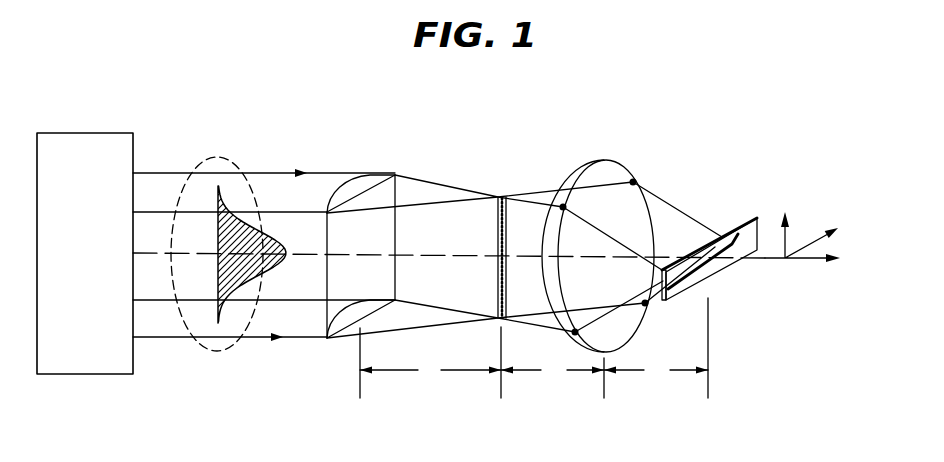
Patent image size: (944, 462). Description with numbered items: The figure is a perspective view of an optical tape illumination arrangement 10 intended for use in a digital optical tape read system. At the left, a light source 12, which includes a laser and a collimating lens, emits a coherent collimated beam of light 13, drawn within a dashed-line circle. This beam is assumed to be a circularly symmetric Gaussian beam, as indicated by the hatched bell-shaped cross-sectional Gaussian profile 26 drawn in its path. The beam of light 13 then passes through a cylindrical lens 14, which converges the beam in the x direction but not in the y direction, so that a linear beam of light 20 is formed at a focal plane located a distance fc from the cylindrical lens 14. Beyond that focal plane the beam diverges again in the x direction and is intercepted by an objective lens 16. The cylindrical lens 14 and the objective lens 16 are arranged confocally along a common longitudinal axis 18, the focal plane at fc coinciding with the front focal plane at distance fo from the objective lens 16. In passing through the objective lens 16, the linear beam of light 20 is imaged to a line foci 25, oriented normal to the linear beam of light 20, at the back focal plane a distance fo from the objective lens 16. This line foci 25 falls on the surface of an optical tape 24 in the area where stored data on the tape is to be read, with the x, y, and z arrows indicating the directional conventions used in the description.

The optical tape illumination arrangement 10 is at (437, 96).
The light source 12 is at (115, 133).
The coherent collimated beam of light 13 is at (215, 158).
The cylindrical lens 14 is at (370, 188).
The objective lens 16 is at (619, 162).
The longitudinal axis 18 is at (768, 259).
The linear beam of light 20 is at (498, 218).
The optical tape 24 is at (748, 218).
The line foci 25 is at (708, 266).
The Gaussian profile 26 is at (245, 217).